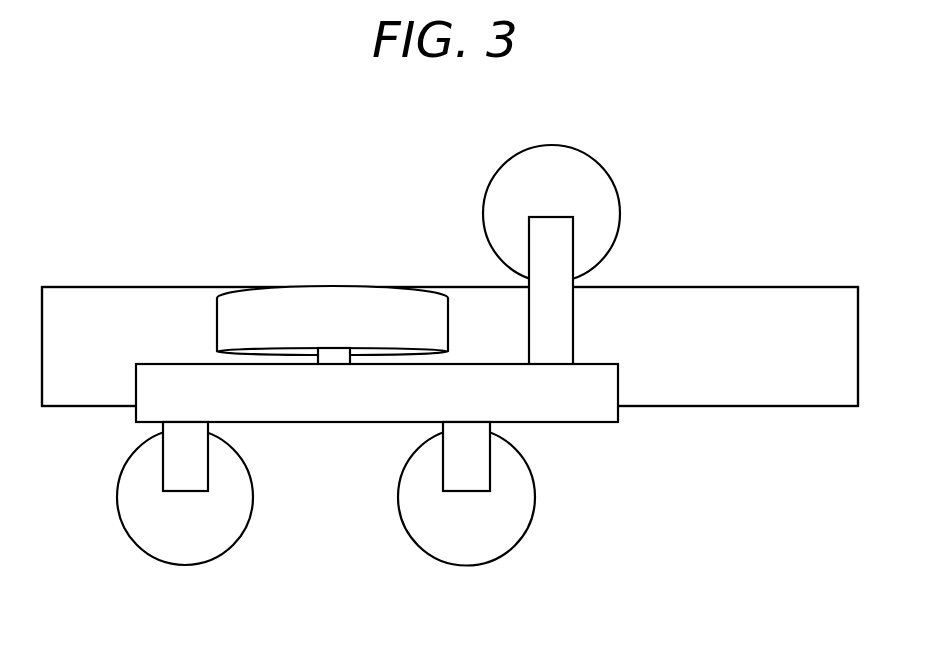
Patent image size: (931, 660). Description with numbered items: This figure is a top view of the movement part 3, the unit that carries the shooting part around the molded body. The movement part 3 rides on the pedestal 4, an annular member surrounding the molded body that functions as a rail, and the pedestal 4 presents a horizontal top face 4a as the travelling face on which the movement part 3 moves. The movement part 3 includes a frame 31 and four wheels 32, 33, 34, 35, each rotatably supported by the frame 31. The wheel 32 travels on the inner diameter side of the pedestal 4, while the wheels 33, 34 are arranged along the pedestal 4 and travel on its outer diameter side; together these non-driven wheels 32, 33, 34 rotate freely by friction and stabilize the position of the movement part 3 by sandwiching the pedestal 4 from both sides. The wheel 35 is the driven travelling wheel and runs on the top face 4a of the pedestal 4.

The movement part 3 is at (613, 110).
The top face 4a is at (820, 394).
The pedestal 4 is at (450, 346).
The frame 31 is at (555, 317).
The wheel 32 is at (582, 180).
The wheel 33 is at (197, 552).
The wheel 34 is at (482, 552).
The wheel 35 is at (349, 297).